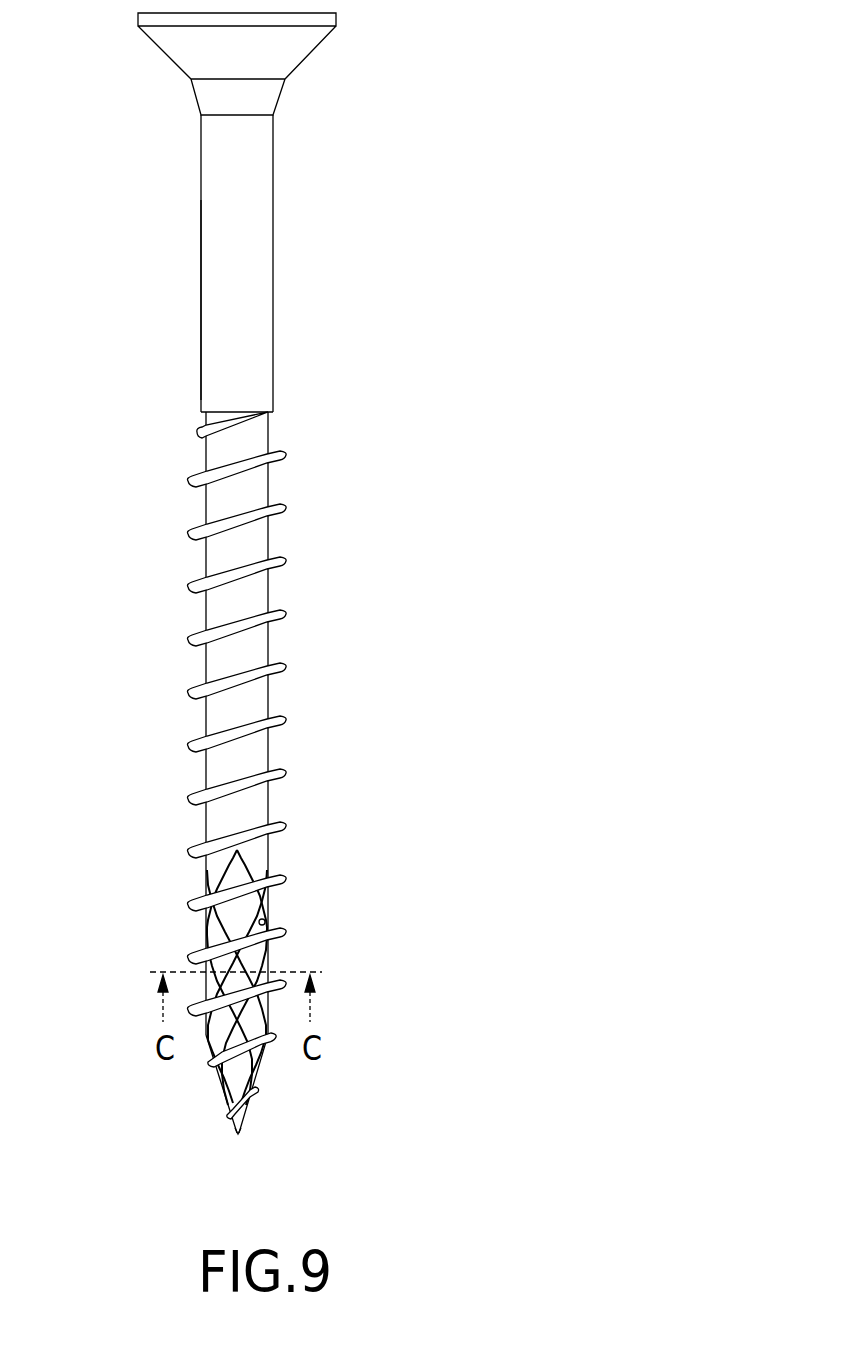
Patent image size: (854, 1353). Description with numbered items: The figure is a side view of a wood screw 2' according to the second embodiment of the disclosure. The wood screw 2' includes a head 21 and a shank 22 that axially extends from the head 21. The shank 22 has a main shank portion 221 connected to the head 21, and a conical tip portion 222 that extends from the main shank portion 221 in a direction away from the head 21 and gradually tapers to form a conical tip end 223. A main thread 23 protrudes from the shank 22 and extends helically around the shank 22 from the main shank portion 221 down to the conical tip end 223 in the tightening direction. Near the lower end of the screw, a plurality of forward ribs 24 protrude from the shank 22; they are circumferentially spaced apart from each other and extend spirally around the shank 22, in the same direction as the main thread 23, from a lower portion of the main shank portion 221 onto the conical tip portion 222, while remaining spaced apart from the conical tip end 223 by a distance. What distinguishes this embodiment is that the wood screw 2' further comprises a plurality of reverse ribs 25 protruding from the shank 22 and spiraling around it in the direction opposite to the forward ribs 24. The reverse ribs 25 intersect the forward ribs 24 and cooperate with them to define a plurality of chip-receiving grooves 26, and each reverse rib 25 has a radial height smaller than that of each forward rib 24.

The wood screw 2' is at (270, 595).
The head 21 is at (308, 45).
The shank 22 is at (300, 319).
The main shank portion 221 is at (207, 295).
The conical tip portion 222 is at (230, 1082).
The conical tip end 223 is at (238, 1135).
The main thread 23 is at (287, 452).
The forward ribs 24 is at (303, 892).
The reverse ribs 25 is at (275, 845).
The chip-receiving grooves 26 is at (250, 920).